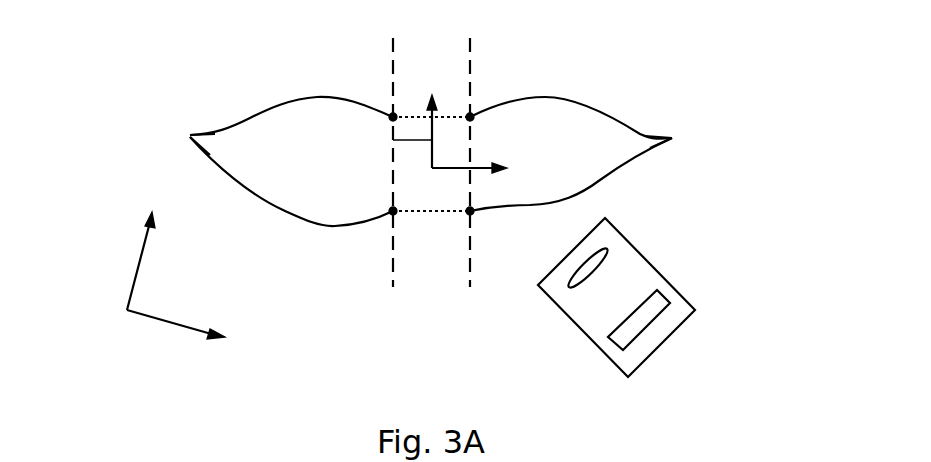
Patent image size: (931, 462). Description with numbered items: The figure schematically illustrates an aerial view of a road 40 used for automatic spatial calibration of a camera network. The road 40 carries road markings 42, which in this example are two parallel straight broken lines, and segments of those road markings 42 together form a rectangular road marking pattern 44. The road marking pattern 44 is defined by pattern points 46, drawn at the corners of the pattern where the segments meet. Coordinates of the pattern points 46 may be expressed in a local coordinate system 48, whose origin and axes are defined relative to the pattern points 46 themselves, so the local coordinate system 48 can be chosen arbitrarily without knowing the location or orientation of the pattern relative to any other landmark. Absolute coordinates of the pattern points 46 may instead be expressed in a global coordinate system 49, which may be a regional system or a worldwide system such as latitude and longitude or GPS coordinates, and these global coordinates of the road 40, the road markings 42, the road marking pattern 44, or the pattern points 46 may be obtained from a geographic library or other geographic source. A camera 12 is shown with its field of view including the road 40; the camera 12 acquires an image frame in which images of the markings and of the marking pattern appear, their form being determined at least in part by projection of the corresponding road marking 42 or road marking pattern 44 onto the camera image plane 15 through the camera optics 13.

The road 40 is at (525, 75).
The road markings 42 is at (468, 77).
The road marking pattern 44 is at (433, 210).
The pattern points 46 is at (432, 144).
The local coordinate system 48 is at (393, 140).
The global coordinate system 49 is at (140, 250).
The camera 12 is at (655, 267).
The camera optics 13 is at (567, 292).
The camera image plane 15 is at (615, 348).